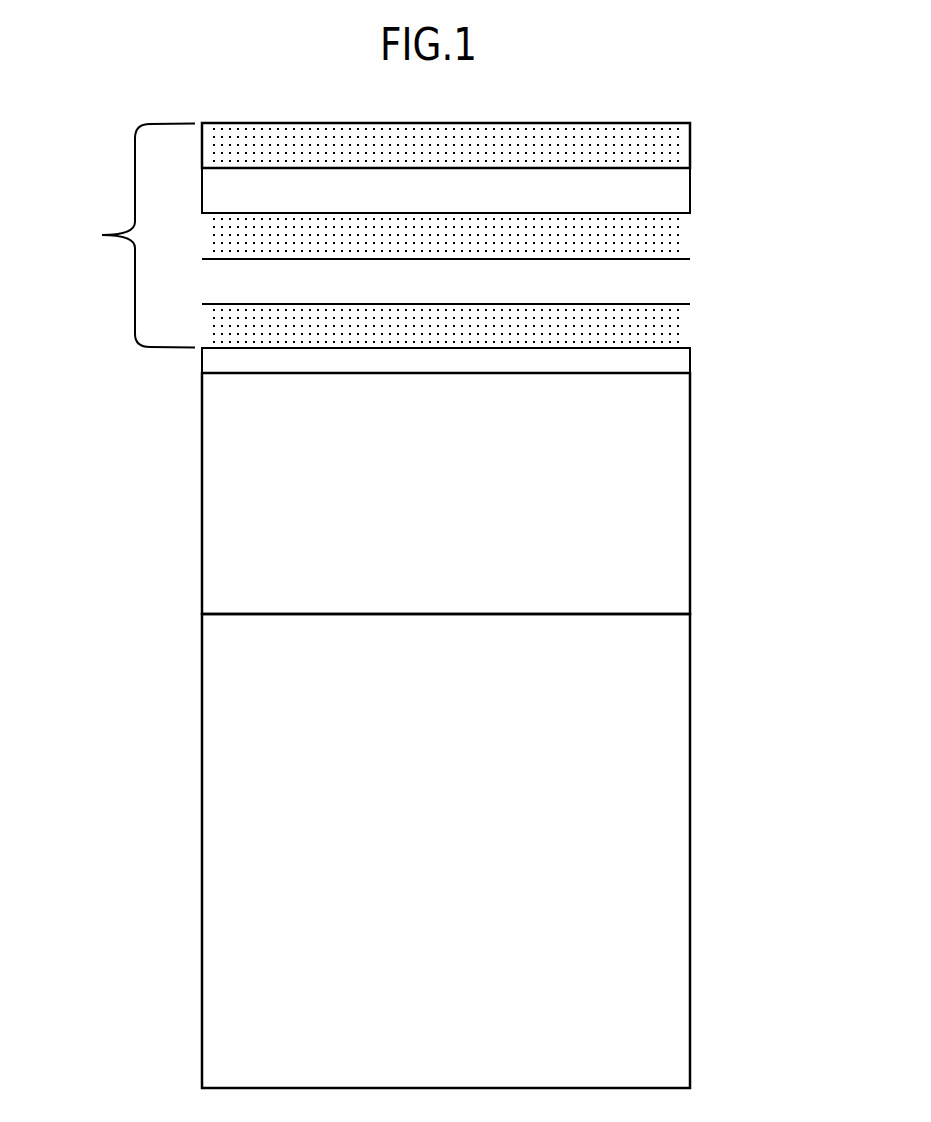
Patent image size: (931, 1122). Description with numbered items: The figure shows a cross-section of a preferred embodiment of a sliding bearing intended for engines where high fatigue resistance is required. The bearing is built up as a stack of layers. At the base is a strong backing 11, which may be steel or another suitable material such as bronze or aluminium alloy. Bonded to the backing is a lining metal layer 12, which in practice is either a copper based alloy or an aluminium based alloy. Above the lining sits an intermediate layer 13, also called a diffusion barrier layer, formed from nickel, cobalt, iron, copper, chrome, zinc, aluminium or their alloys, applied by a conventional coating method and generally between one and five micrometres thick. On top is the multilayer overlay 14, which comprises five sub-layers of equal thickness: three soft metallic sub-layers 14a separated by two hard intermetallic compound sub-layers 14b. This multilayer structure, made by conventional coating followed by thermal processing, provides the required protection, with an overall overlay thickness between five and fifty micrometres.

The backing 11 is at (690, 863).
The lining metal layer 12 is at (690, 485).
The intermediate layer 13 is at (690, 360).
The overlay layer 14 is at (104, 235).
The soft metallic sub-layers 14a is at (690, 143).
The hard intermetallic compound sub-layers 14b is at (690, 190).